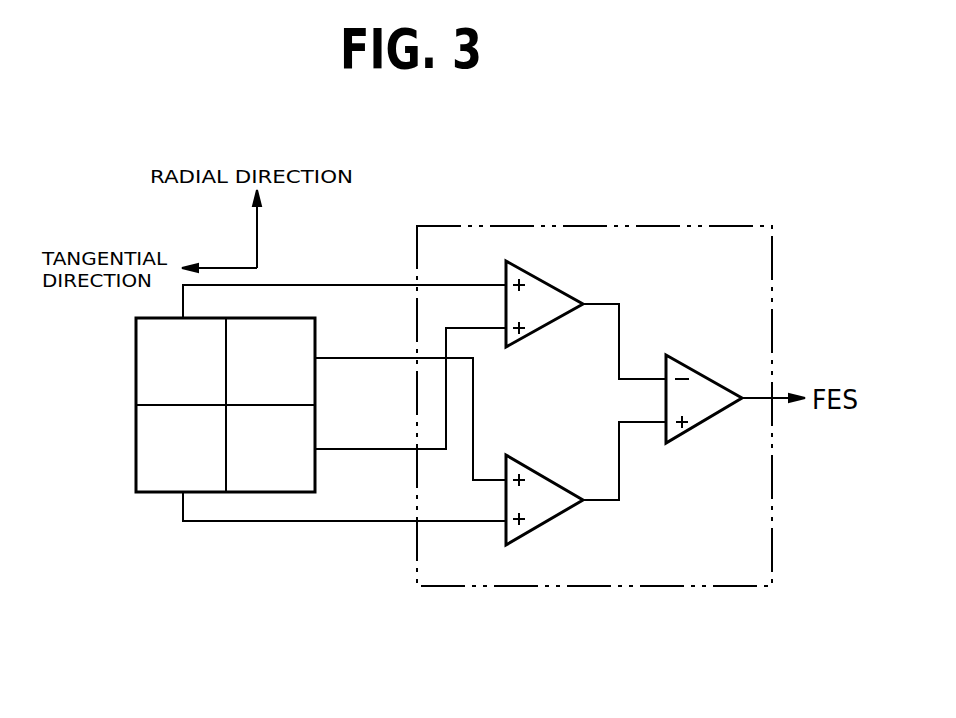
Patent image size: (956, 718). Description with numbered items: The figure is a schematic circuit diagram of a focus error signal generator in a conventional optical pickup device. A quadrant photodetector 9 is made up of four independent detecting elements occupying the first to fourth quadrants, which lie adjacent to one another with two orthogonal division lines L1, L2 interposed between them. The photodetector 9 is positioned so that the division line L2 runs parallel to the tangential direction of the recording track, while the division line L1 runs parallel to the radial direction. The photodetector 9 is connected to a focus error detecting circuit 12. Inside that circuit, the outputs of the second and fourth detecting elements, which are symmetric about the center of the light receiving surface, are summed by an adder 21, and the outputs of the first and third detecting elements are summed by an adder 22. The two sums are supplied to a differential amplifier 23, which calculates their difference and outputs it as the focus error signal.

The quadrant photodetector 9 is at (137, 492).
The focus error detecting circuit 12 is at (724, 226).
The adder 21 is at (571, 298).
The adder 22 is at (565, 490).
The differential amplifier 23 is at (715, 383).
The division line L1 is at (227, 463).
The division line L2 is at (170, 403).